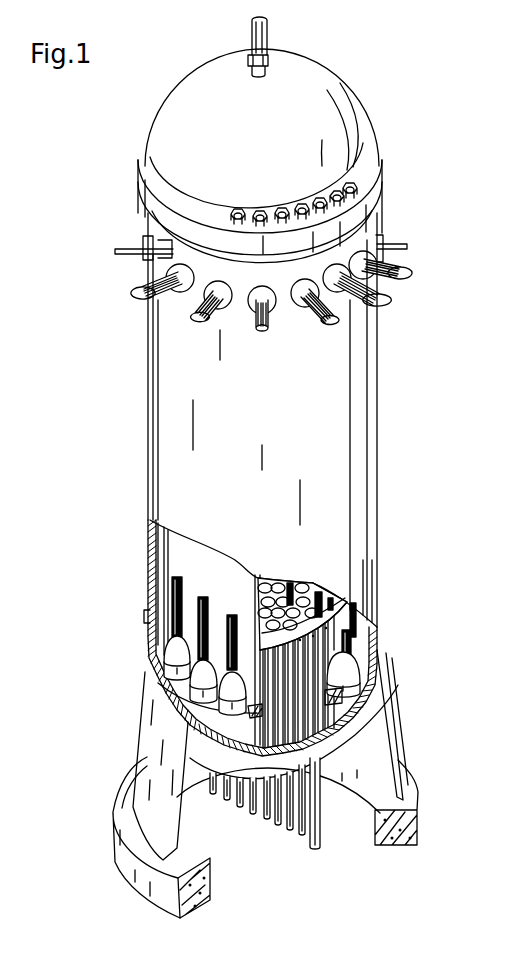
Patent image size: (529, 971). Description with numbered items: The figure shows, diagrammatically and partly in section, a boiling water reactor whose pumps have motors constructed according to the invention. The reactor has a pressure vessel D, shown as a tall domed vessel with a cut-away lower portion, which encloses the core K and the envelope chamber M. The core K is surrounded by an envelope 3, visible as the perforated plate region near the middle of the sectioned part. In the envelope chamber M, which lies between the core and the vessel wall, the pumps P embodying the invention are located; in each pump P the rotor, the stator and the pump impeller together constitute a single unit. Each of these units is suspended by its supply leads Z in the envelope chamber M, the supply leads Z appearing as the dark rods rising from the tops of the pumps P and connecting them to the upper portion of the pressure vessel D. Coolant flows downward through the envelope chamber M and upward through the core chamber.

The envelope chamber M is at (162, 557).
The supply leads Z is at (202, 595).
The envelope 3 is at (260, 578).
The core K is at (331, 597).
The pumps P is at (173, 653).
The pressure vessel D is at (376, 640).